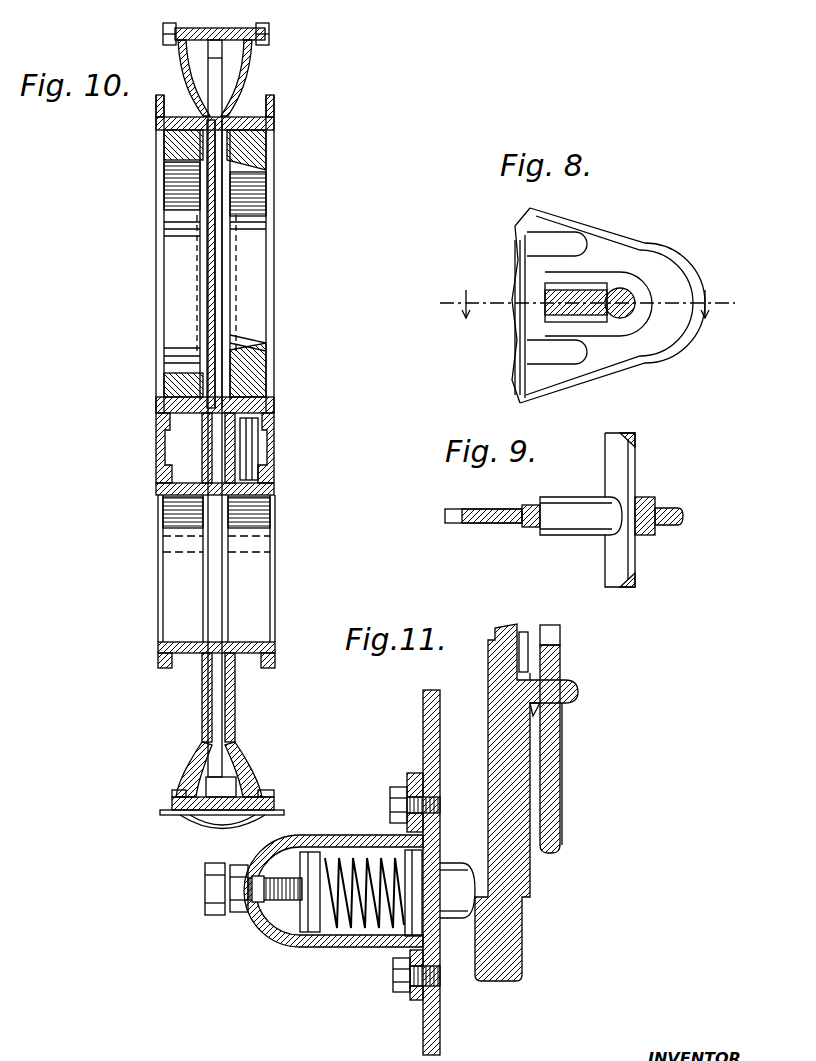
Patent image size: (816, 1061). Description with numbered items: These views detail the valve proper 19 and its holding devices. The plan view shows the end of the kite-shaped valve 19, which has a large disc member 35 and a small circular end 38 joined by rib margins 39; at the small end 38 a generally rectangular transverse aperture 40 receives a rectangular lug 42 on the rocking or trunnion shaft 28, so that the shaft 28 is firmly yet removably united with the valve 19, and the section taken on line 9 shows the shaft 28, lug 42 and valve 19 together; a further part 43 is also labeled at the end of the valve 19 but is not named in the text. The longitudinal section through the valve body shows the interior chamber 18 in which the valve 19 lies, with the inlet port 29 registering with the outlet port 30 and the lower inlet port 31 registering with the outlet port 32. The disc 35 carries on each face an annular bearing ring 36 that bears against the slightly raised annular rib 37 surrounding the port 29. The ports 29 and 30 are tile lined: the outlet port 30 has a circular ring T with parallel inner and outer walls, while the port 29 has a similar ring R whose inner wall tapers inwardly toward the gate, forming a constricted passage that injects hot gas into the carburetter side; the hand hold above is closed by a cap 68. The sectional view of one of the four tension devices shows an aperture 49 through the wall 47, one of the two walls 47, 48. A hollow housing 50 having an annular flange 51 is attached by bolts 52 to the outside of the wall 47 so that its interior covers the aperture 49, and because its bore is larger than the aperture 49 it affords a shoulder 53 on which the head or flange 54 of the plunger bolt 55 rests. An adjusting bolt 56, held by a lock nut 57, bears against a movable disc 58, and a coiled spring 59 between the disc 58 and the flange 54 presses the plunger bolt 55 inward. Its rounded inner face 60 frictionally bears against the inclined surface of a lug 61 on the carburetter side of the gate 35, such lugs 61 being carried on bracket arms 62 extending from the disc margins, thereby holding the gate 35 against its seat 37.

In FIG. 10, the cap 68 is at (268, 36).
In FIG. 10, the interior chamber 18 is at (215, 52).
In FIG. 11, the interior chamber 18 is at (464, 731).
In FIG. 10, the annular rib 37 is at (238, 116).
In FIG. 11, the annular rib 37 is at (541, 706).
In FIG. 10, the circular ring T is at (157, 150).
In FIG. 10, the circular ring R is at (262, 145).
In FIG. 10, the disc member 35 is at (214, 283).
In FIG. 11, the disc member 35 is at (490, 690).
In FIG. 10, the valve proper 19 is at (222, 297).
In FIG. 8, the valve proper 19 is at (525, 372).
In FIG. 9, the valve proper 19 is at (480, 524).
In FIG. 10, the inlet port 29 is at (275, 325).
In FIG. 11, the inlet port 29 is at (561, 635).
In FIG. 10, the outlet port 30 is at (185, 318).
In FIG. 10, the lower inlet port 31 is at (268, 600).
In FIG. 10, the outlet port 32 is at (165, 625).
In FIG. 8, the rib margins 39 is at (560, 226).
In FIG. 8, the aperture 40 is at (628, 330).
In FIG. 8, the slot 43 is at (585, 345).
In FIG. 8, the rocking or trunnion shaft 28 is at (632, 298).
In FIG. 9, the rocking or trunnion shaft 28 is at (622, 562).
In FIG. 8, the small circular end 38 is at (665, 325).
In FIG. 9, the small circular end 38 is at (662, 512).
In FIG. 8, the lug 42 is at (576, 302).
In FIG. 9, the lug 42 is at (588, 522).
In FIG. 8, the section line 9 is at (584, 304).
In FIG. 11, the bracket arms 62 is at (527, 870).
In FIG. 11, the rounded inner face 60 is at (492, 886).
In FIG. 11, the annular bearing ring 36 is at (561, 740).
In FIG. 11, the wall 48 is at (563, 770).
In FIG. 11, the wall 47 is at (423, 728).
In FIG. 11, the plunger bolt 55 is at (432, 846).
In FIG. 11, the hollow housing 50 is at (306, 948).
In FIG. 11, the adjusting bolt 56 is at (277, 936).
In FIG. 11, the lock nut 57 is at (240, 914).
In FIG. 11, the disc 58 is at (310, 852).
In FIG. 11, the coiled spring 59 is at (352, 857).
In FIG. 11, the head or flange 54 is at (402, 938).
In FIG. 11, the shoulder 53 is at (457, 890).
In FIG. 11, the aperture 49 is at (448, 920).
In FIG. 11, the lug 61 is at (476, 925).
In FIG. 11, the bolts 52 is at (393, 976).
In FIG. 11, the annular flange 51 is at (420, 993).